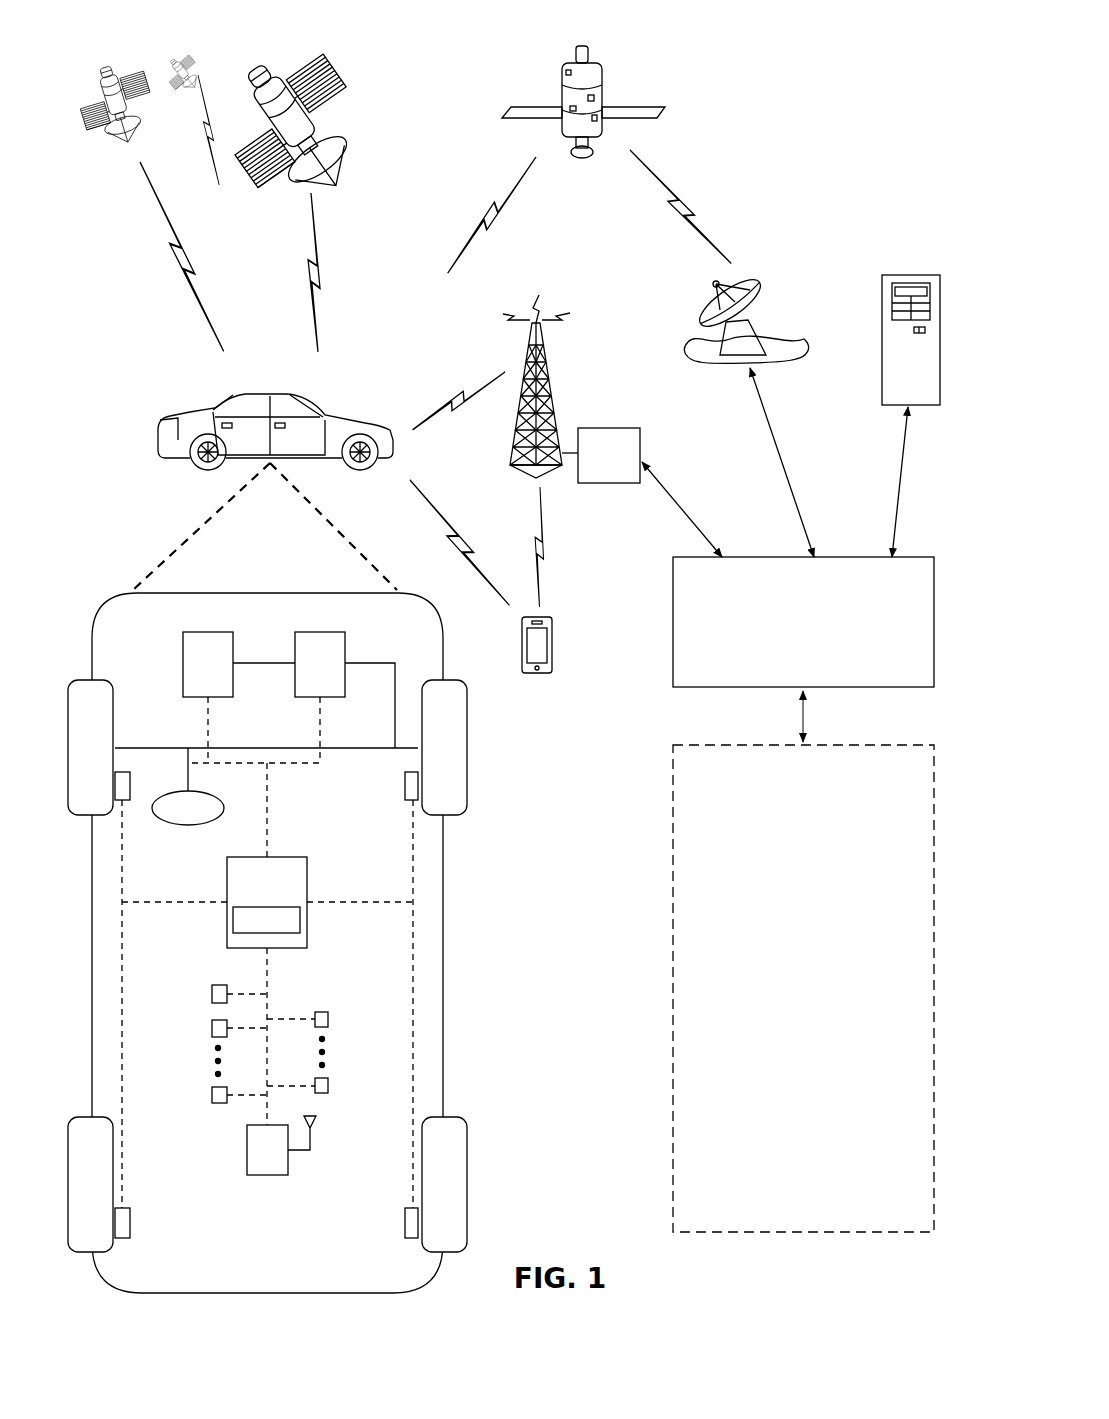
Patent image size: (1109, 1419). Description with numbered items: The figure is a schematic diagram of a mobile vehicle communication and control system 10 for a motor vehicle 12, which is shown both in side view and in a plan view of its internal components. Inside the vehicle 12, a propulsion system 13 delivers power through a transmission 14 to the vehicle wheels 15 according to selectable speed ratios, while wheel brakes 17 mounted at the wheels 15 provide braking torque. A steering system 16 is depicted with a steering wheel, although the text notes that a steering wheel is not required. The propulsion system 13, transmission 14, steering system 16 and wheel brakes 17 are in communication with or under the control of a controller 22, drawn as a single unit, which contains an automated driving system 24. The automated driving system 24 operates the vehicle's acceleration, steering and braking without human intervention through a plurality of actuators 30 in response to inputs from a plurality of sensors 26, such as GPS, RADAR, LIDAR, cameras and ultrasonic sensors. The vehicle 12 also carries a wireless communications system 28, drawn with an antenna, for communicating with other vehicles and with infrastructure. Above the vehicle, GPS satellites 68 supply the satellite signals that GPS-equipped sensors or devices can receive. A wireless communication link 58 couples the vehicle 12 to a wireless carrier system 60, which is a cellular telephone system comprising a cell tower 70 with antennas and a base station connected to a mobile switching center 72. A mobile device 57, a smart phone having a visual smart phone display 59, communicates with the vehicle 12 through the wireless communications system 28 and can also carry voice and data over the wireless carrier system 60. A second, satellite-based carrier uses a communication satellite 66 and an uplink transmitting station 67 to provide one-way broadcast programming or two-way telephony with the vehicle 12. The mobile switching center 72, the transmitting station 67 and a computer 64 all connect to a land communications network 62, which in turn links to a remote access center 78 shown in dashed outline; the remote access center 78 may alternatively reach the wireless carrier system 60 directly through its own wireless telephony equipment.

The mobile vehicle communication and control system 10 is at (845, 163).
The motor vehicle 12 is at (158, 424).
The propulsion system 13 is at (183, 663).
The transmission 14 is at (346, 648).
The vehicle wheels 15 is at (114, 698).
The steering system 16 is at (188, 826).
The wheel brakes 17 is at (123, 802).
The controller 22 is at (308, 908).
The automated driving system 24 is at (287, 934).
The sensors 26 is at (212, 994).
The wireless communications system 28 is at (268, 1176).
The actuators 30 is at (329, 1019).
The mobile device 57 is at (545, 676).
The wireless carrier communication link 58 is at (432, 512).
The visual smart phone display 59 is at (540, 648).
The wireless carrier system 60 is at (518, 482).
The land communications network 62 is at (936, 622).
The computer 64 is at (940, 340).
The communication satellite 66 is at (606, 78).
The uplink transmitting station 67 is at (780, 340).
The GPS satellites 68 is at (342, 86).
The cell tower 70 is at (548, 378).
The mobile switching center 72 is at (642, 437).
The remote access center 78 is at (811, 1234).